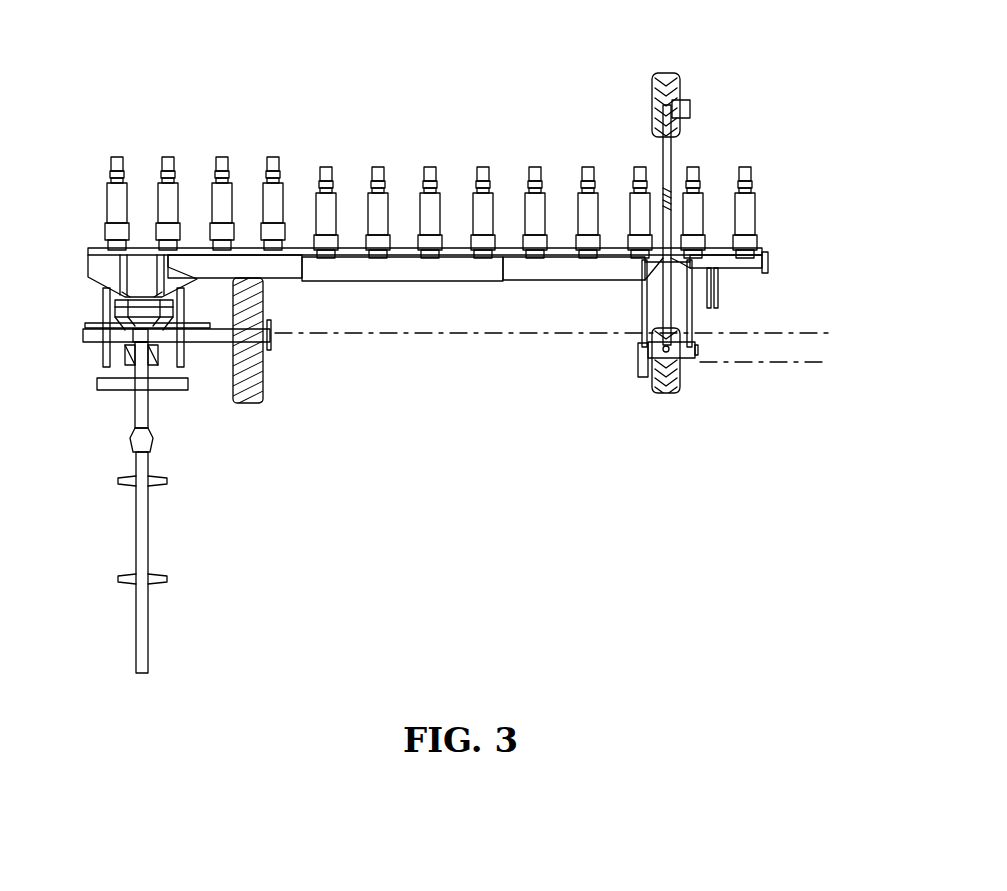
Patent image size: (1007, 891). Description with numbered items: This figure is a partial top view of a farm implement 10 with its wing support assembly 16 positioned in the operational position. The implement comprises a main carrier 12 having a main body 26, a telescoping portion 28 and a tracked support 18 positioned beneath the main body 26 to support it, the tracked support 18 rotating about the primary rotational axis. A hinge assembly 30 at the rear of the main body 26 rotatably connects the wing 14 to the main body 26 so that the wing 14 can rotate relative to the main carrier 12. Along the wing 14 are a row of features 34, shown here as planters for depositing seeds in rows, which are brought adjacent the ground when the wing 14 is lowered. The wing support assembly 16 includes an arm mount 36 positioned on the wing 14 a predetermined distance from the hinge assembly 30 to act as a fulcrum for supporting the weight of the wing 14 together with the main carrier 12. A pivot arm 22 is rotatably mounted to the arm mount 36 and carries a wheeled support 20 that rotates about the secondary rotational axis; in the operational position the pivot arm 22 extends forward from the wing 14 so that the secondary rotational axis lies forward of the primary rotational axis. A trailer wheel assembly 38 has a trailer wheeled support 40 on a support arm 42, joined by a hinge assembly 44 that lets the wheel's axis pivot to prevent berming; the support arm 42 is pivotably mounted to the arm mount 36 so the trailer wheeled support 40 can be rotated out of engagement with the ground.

The farm implement 10 is at (172, 126).
The main carrier 12 is at (78, 370).
The wing 14 is at (776, 240).
The wing support assembly 16 is at (648, 408).
The tracked support 18 is at (247, 403).
The wheeled support 20 is at (676, 395).
The pivot arm 22 is at (643, 325).
The main body 26 is at (135, 412).
The telescoping portion 28 is at (135, 543).
The hinge assembly 30 is at (103, 243).
The features 34 is at (272, 157).
The arm mount 36 is at (641, 279).
The trailer wheel assembly 38 is at (650, 55).
The trailer wheeled support 40 is at (653, 108).
The support arm 42 is at (673, 147).
The hinge assembly 44 is at (719, 297).